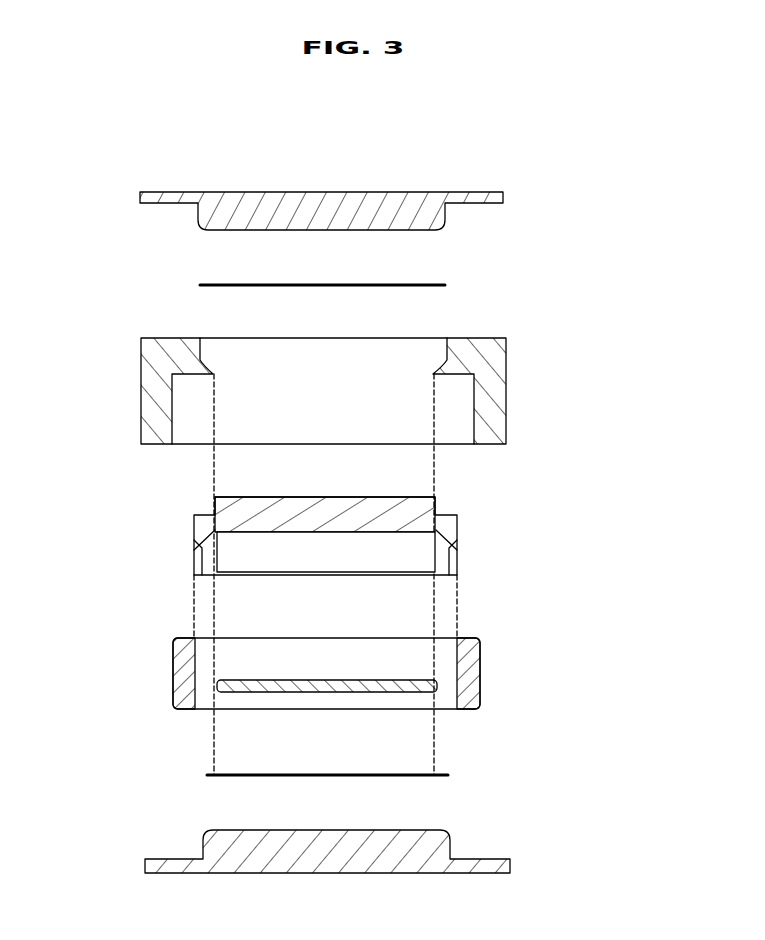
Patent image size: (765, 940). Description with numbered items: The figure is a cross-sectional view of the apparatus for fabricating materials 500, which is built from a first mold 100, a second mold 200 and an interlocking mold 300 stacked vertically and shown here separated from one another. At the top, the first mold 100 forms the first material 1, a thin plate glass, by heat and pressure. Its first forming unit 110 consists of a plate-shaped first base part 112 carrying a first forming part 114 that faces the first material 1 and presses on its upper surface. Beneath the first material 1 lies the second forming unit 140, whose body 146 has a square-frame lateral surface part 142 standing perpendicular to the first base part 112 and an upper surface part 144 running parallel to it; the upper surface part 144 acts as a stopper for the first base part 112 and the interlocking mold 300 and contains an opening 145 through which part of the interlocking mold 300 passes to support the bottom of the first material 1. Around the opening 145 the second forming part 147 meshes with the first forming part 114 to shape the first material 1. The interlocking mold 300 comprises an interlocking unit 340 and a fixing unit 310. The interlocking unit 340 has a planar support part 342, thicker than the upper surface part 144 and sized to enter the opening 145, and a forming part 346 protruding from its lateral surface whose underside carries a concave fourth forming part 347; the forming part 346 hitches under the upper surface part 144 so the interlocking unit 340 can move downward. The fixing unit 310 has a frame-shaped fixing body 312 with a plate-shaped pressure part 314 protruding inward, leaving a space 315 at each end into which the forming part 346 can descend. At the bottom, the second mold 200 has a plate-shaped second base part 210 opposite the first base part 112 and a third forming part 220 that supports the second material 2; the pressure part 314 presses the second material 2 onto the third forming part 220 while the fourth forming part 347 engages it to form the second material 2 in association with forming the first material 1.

The apparatus for fabricating materials 500 is at (495, 130).
The first mold 100 is at (637, 230).
The first forming unit 110 is at (376, 199).
The first base part 112 is at (193, 192).
The first forming part 114 is at (204, 226).
The first material 1 is at (198, 284).
The second forming unit 140 is at (319, 368).
The lateral surface part 142 is at (148, 393).
The upper surface part 144 is at (148, 339).
The opening 145 is at (390, 348).
The body 146 is at (58, 298).
The second forming part 147 is at (204, 356).
The interlocking mold 300 is at (596, 537).
The interlocking unit 340 is at (345, 533).
The support part 342 is at (340, 497).
The forming part 346 is at (191, 532).
The fourth forming part 347 is at (202, 562).
The fixing unit 310 is at (342, 671).
The fixing body 312 is at (177, 682).
The pressure part 314 is at (353, 693).
The space 315 is at (348, 668).
The second material 2 is at (204, 773).
The second mold 200 is at (386, 852).
The second base part 210 is at (473, 874).
The third forming part 220 is at (440, 830).